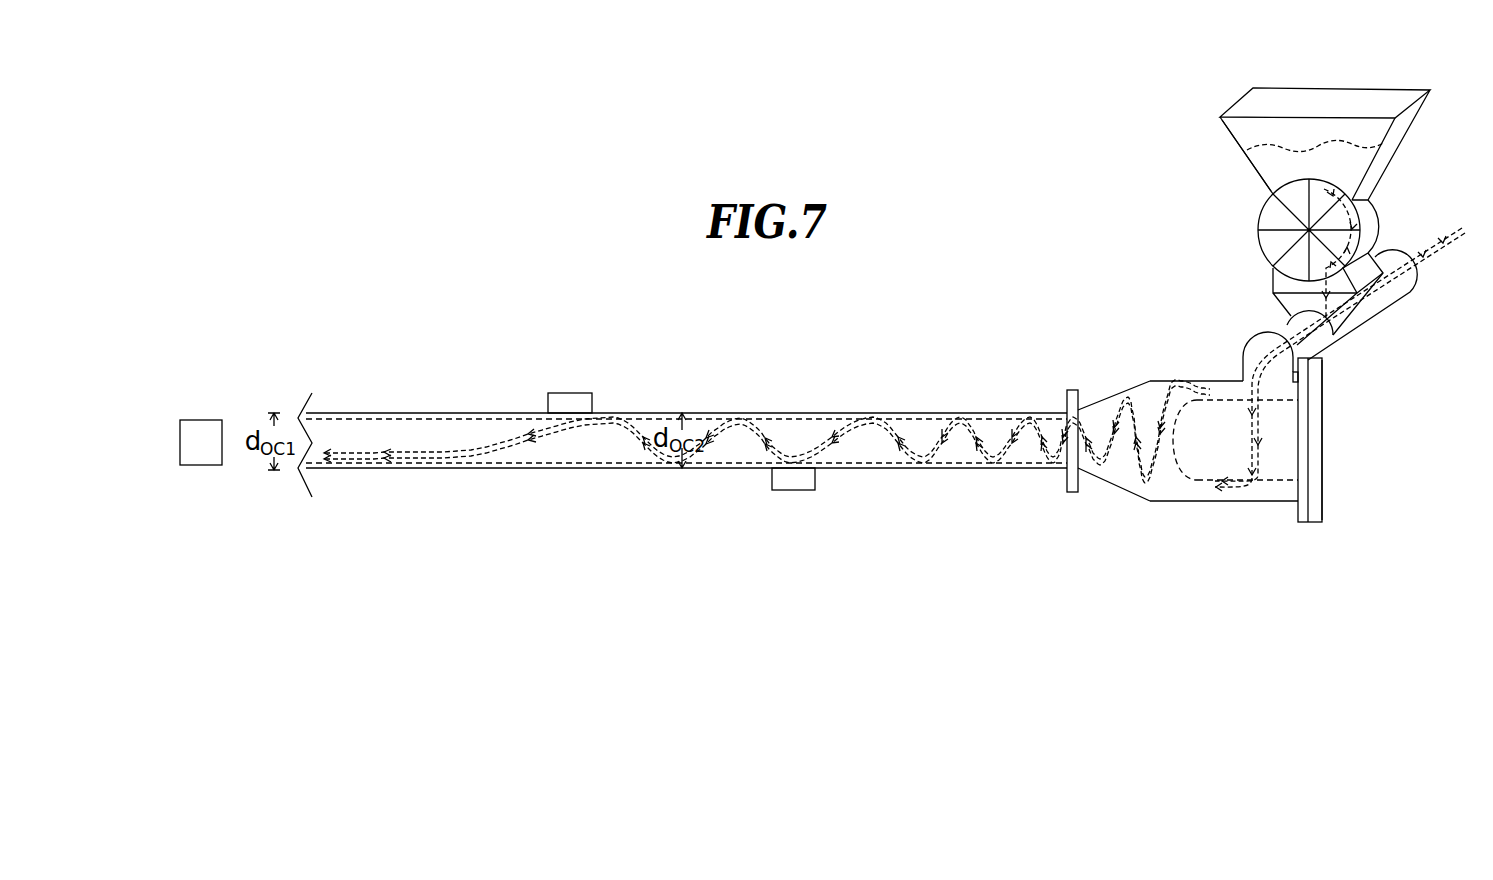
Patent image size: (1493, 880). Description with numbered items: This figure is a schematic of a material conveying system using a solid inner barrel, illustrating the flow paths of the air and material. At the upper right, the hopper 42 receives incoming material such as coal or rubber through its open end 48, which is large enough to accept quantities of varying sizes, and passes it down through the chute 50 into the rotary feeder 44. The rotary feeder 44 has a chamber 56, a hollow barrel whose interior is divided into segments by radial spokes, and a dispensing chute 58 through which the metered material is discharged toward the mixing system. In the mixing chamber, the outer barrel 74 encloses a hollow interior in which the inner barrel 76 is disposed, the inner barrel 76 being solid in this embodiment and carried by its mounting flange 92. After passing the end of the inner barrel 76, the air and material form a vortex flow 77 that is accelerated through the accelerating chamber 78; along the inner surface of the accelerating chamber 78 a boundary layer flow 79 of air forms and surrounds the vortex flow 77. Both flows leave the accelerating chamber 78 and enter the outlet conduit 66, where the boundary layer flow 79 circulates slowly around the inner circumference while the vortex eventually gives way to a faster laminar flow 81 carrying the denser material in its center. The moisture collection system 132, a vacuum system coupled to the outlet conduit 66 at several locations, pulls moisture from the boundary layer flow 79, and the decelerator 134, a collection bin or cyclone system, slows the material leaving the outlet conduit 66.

The hopper 42 is at (1408, 130).
The rotary feeder 44 is at (1260, 230).
The open end 48 is at (1333, 100).
The chute 50 is at (1263, 172).
The chamber 56 is at (1368, 220).
The dispensing chute 58 is at (1357, 308).
The outlet conduit 66 is at (537, 472).
The outer barrel 74 is at (1205, 493).
The inner barrel 76 is at (1282, 468).
The vortex flow 77 is at (1158, 402).
The accelerating chamber 78 is at (1117, 490).
The boundary layer flow 79 is at (1042, 470).
The laminar flow 81 is at (438, 452).
The mounting flange 92 is at (1323, 467).
The moisture collection system 132 is at (572, 397).
The decelerator 134 is at (208, 460).